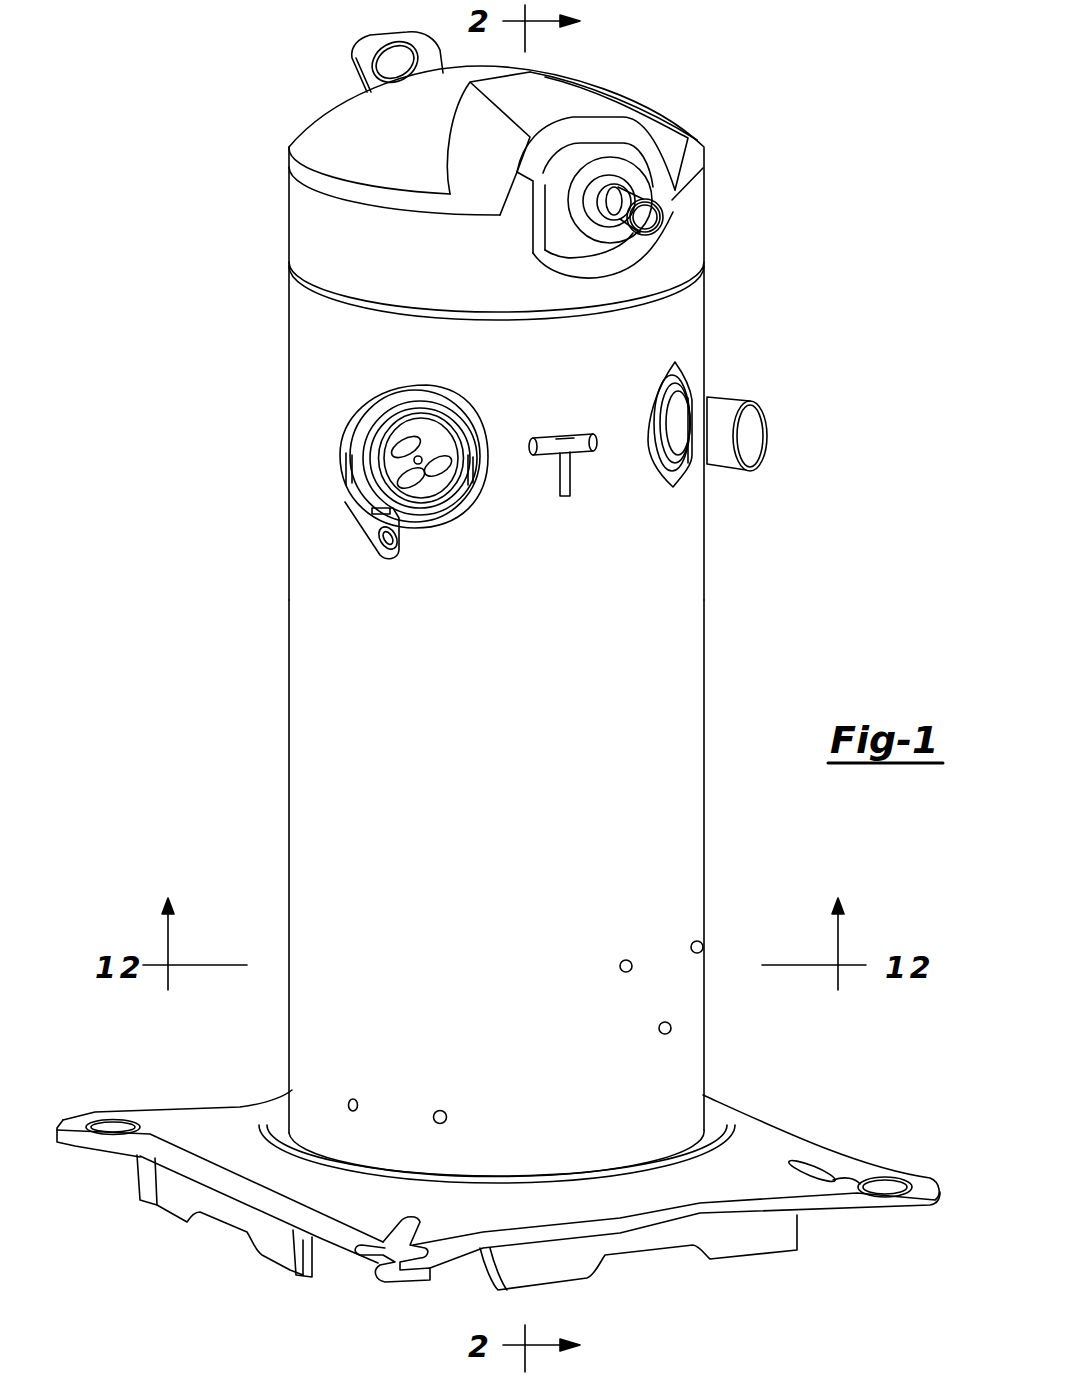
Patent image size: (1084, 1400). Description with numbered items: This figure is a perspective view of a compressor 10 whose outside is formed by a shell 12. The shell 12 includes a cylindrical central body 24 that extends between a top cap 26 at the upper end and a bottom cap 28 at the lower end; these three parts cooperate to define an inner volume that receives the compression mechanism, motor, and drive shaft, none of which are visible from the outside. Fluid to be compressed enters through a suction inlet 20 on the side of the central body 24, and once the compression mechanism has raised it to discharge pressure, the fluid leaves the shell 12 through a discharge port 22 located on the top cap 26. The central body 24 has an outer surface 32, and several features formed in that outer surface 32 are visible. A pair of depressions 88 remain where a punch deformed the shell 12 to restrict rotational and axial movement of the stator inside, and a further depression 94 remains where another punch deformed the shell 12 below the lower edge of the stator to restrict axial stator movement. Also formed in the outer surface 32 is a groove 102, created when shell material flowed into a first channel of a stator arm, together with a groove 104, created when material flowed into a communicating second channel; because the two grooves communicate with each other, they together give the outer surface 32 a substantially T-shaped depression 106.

The compressor 10 is at (287, 263).
The shell 12 is at (286, 356).
The suction inlet 20 is at (750, 445).
The discharge port 22 is at (655, 213).
The central body 24 is at (373, 597).
The top cap 26 is at (455, 85).
The bottom cap 28 is at (733, 1123).
The outer surface 32 is at (548, 630).
The depressions 88 is at (632, 966).
The depression 94 is at (671, 1028).
The groove 102 is at (587, 433).
The groove 104 is at (567, 472).
The T-shaped depression 106 is at (565, 440).